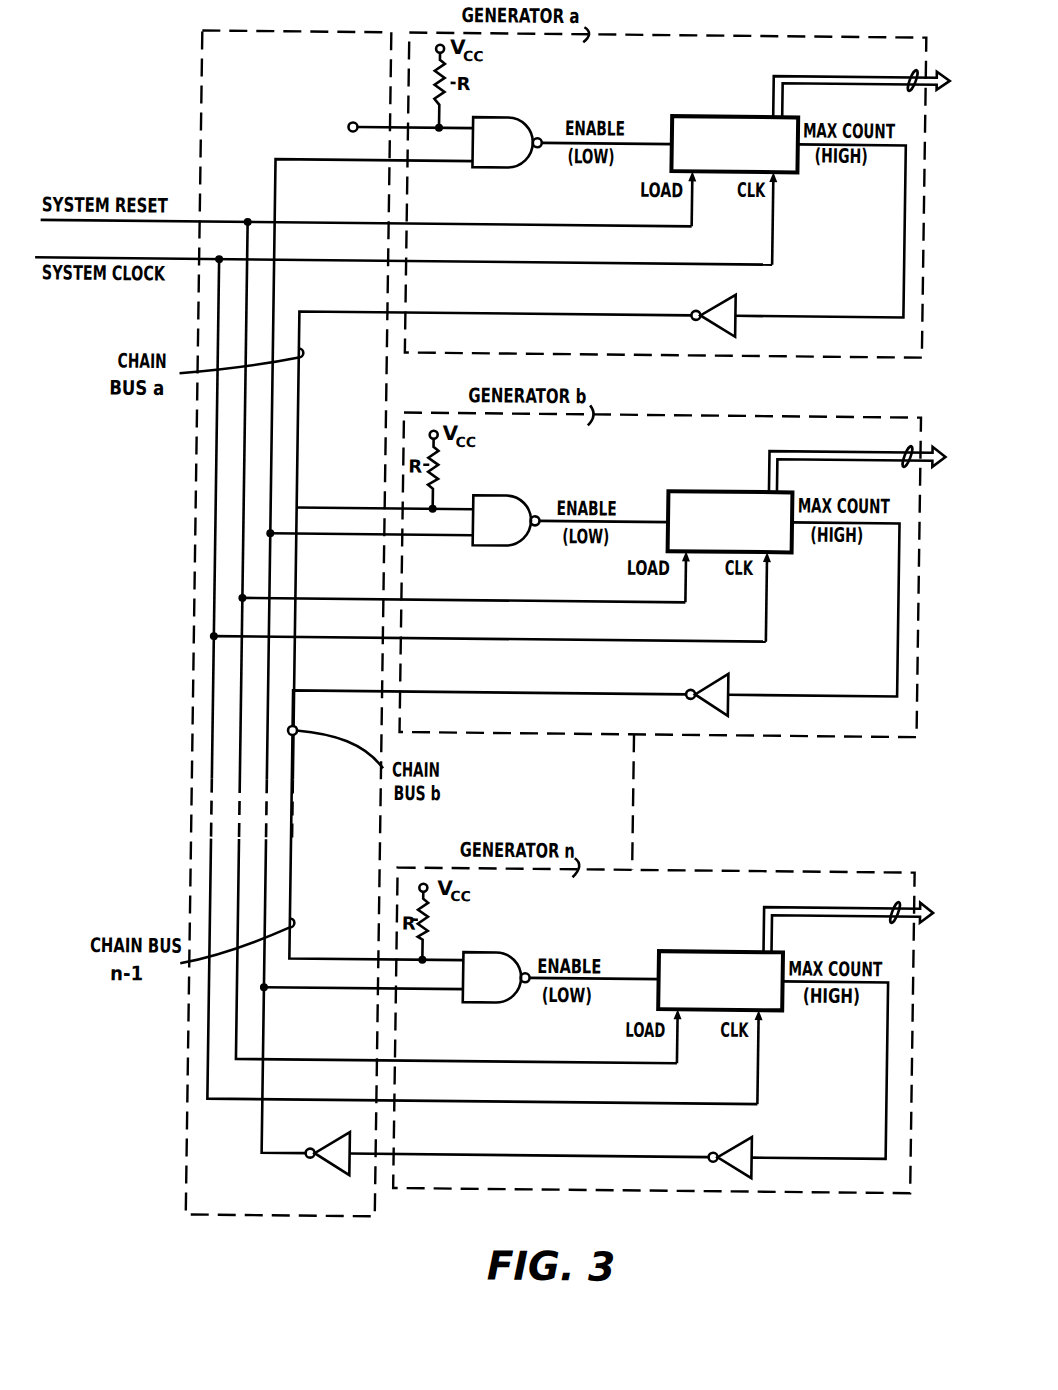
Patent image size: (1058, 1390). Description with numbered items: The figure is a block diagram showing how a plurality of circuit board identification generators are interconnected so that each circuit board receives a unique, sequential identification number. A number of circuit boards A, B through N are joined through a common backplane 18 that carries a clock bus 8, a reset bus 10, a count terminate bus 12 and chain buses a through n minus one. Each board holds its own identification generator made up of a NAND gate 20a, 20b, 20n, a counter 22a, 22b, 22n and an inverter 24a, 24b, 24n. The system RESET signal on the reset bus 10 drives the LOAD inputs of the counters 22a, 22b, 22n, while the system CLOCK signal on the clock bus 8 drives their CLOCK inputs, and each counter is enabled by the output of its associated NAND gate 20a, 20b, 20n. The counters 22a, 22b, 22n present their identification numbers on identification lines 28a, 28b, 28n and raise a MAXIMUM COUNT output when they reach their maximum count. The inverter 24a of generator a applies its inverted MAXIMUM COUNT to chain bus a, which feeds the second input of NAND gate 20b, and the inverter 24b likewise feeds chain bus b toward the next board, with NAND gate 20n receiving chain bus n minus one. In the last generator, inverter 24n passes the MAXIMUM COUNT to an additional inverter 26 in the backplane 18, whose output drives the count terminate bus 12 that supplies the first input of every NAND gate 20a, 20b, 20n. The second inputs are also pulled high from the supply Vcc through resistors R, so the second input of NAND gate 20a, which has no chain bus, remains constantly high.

The clock bus 8 is at (213, 516).
The reset bus 10 is at (241, 667).
The count terminate bus 12 is at (268, 744).
The backplane 18 is at (204, 1168).
The NAND gate 20a is at (527, 108).
The NAND gate 20b is at (528, 485).
The NAND gate 20n is at (522, 942).
The counter 22a is at (727, 114).
The counter 22b is at (727, 489).
The counter 22n is at (738, 949).
The inverter 24a is at (727, 305).
The inverter 24b is at (727, 676).
The inverter 24n is at (759, 1145).
The additional inverter 26 is at (342, 1138).
The identification lines 28a is at (902, 91).
The identification lines 28b is at (897, 462).
The identification lines 28n is at (891, 917).
The circuit board A is at (741, 36).
The circuit board B is at (753, 416).
The circuit board N is at (732, 870).